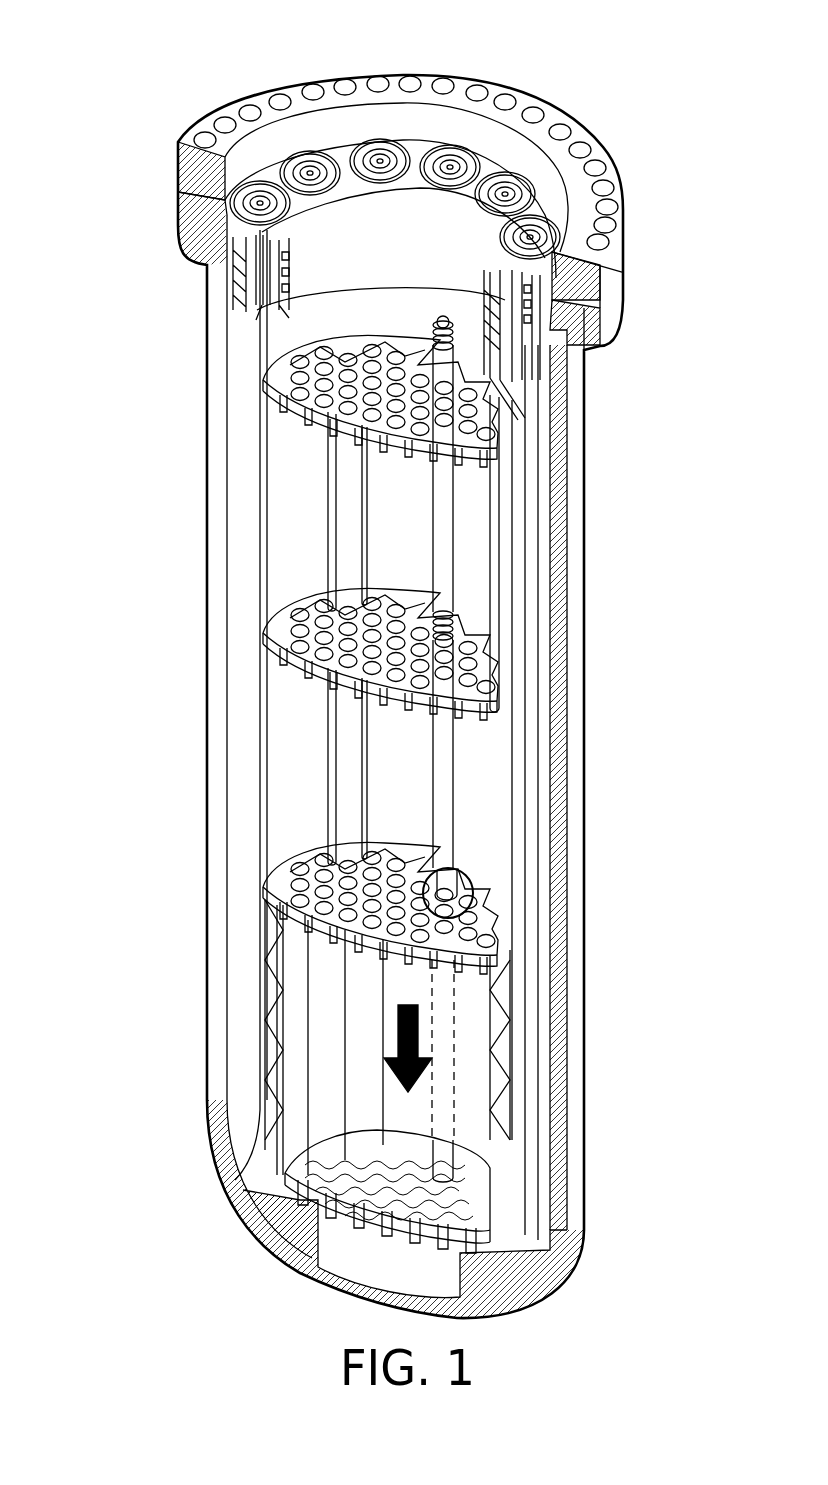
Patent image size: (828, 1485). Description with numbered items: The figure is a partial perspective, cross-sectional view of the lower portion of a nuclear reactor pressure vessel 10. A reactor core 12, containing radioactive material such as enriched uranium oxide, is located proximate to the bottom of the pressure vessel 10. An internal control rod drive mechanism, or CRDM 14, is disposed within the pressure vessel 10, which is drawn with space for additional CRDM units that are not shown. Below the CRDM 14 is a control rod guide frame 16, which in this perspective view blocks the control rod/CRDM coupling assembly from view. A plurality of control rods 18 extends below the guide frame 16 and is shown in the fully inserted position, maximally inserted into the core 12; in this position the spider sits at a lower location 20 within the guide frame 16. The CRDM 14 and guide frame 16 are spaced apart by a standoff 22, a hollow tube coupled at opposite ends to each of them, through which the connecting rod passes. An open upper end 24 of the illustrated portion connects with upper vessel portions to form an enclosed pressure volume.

The nuclear reactor pressure vessel 10 is at (207, 487).
The reactor core 12 is at (243, 875).
The control rod drive mechanism (CRDM) 14 is at (457, 523).
The control rod guide frame 16 is at (457, 797).
The control rods 18 is at (447, 1029).
The lower location 20 is at (472, 882).
The standoff 22 is at (460, 607).
The open upper end 24 is at (394, 254).